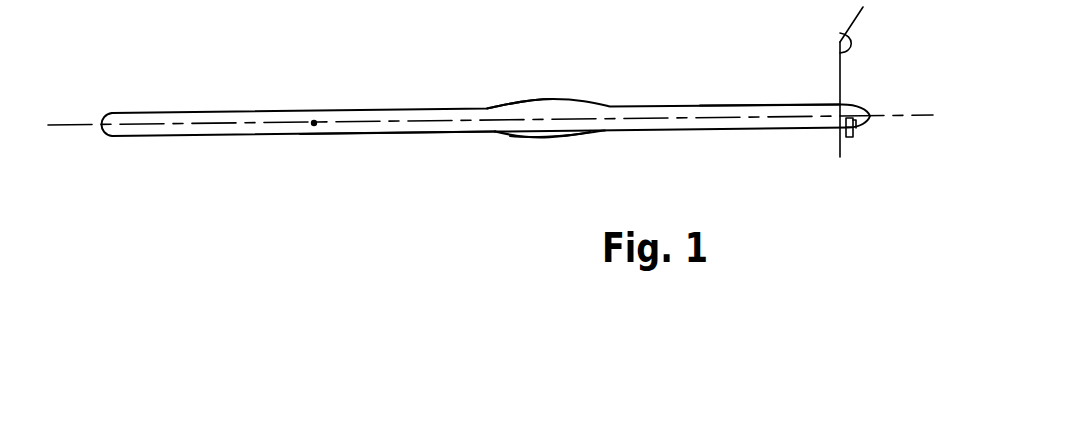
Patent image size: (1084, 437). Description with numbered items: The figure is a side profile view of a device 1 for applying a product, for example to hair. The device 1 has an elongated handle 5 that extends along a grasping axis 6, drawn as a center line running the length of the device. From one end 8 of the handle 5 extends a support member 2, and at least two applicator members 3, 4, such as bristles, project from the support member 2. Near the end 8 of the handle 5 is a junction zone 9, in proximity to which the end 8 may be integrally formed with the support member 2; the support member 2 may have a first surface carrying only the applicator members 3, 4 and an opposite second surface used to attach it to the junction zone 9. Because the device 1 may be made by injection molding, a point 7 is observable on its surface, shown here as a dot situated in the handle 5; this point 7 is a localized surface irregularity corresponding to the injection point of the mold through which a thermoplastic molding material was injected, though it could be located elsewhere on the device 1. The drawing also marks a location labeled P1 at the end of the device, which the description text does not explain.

The device 1 is at (490, 85).
The support member 2 is at (790, 123).
The applicator member 3 is at (853, 137).
The applicator member 4 is at (855, 128).
The handle 5 is at (397, 127).
The grasping axis 6 is at (908, 115).
The point 7 is at (314, 124).
The end of the handle 8 is at (495, 132).
The junction zone 9 is at (557, 132).
The pivot point P1 is at (852, 50).